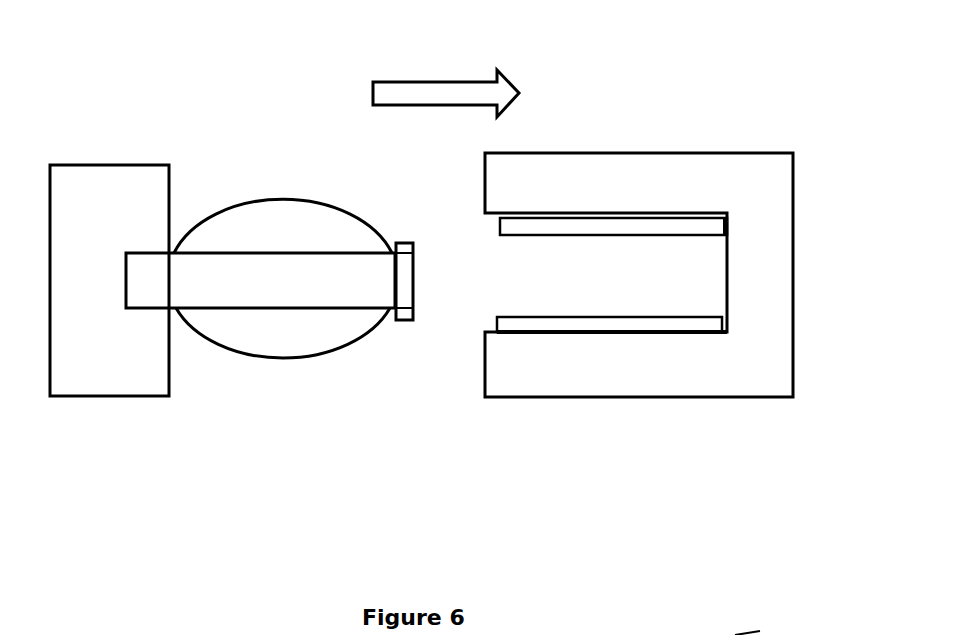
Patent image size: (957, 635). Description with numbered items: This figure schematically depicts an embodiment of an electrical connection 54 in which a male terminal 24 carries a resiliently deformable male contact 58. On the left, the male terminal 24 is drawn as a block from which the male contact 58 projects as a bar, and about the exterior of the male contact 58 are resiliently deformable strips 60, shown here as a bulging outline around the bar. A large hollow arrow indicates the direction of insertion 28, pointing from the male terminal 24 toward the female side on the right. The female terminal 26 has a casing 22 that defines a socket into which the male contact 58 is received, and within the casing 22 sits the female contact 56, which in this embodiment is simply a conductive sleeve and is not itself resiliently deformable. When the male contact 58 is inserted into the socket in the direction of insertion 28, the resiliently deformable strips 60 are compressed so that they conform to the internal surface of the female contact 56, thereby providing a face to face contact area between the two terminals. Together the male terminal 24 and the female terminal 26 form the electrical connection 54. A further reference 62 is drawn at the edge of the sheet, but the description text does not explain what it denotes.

The casing 22 is at (780, 183).
The male terminal 24 is at (120, 148).
The female terminal 26 is at (738, 128).
The direction of insertion 28 is at (453, 95).
The electrical connection 54 is at (695, 91).
The female contact 56 is at (723, 332).
The male contact 58 is at (258, 310).
The resiliently deformable strips 60 is at (268, 199).
The element 62 is at (740, 634).